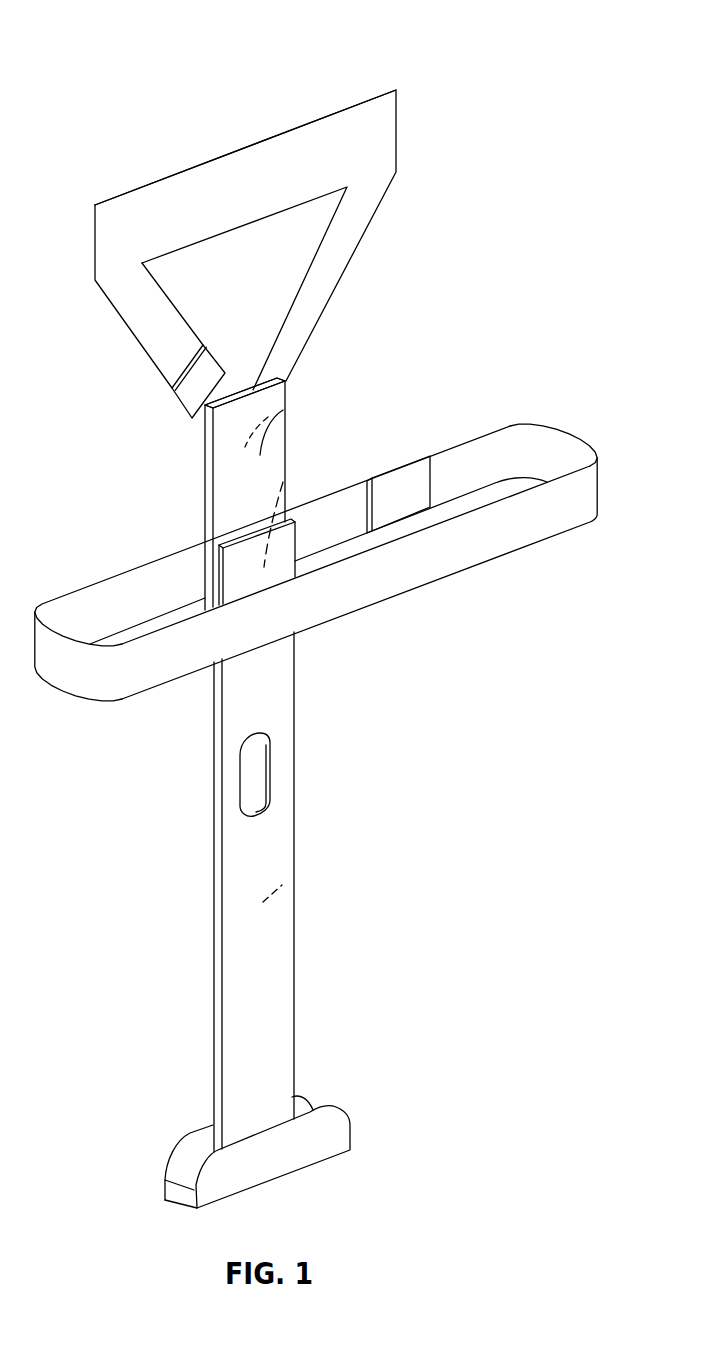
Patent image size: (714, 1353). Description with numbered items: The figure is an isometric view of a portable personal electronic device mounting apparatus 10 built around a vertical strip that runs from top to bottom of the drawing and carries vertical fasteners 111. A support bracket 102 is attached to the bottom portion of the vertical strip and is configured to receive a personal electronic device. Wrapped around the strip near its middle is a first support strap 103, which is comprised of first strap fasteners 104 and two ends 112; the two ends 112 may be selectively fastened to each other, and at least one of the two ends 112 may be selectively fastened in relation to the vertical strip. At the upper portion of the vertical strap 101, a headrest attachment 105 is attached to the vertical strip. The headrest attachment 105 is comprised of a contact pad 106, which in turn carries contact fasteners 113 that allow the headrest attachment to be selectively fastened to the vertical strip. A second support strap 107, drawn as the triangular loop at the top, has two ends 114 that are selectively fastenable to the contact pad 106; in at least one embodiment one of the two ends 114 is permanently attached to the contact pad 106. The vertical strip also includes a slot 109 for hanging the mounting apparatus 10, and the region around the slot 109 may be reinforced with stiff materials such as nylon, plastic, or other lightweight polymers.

The portable personal electronic device mounting apparatus 10 is at (374, 50).
The vertical strap 101 is at (252, 552).
The support bracket 102 is at (327, 1140).
The first support strap 103 is at (326, 604).
The first strap fasteners 104 is at (413, 485).
The headrest attachment 105 is at (128, 190).
The contact pad 106 is at (250, 497).
The second support strap 107 is at (265, 157).
The slot 109 is at (250, 793).
The vertical fasteners 111 is at (272, 918).
The two ends 112 is at (273, 517).
The contact fasteners 113 is at (268, 417).
The two ends 114 is at (190, 395).